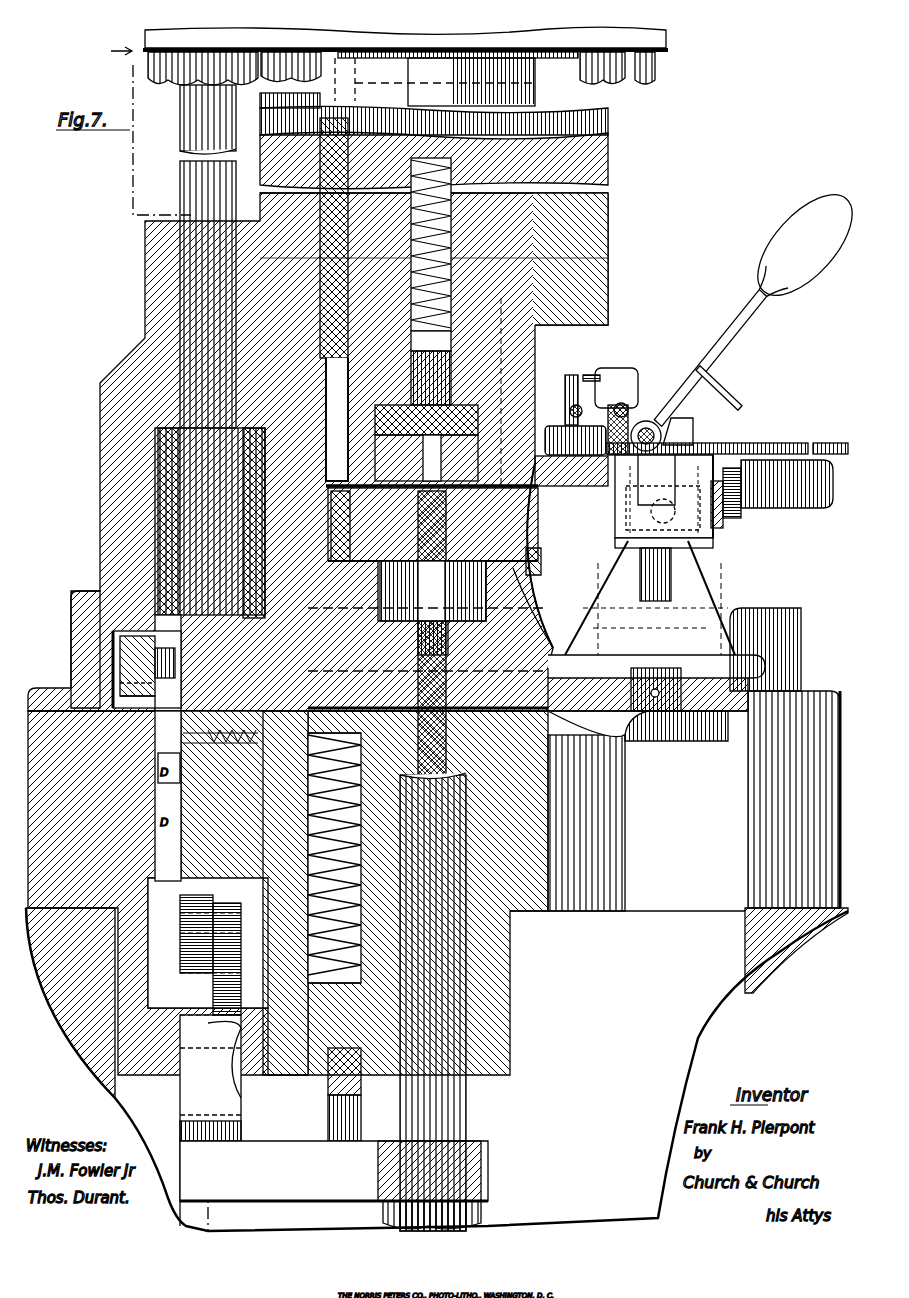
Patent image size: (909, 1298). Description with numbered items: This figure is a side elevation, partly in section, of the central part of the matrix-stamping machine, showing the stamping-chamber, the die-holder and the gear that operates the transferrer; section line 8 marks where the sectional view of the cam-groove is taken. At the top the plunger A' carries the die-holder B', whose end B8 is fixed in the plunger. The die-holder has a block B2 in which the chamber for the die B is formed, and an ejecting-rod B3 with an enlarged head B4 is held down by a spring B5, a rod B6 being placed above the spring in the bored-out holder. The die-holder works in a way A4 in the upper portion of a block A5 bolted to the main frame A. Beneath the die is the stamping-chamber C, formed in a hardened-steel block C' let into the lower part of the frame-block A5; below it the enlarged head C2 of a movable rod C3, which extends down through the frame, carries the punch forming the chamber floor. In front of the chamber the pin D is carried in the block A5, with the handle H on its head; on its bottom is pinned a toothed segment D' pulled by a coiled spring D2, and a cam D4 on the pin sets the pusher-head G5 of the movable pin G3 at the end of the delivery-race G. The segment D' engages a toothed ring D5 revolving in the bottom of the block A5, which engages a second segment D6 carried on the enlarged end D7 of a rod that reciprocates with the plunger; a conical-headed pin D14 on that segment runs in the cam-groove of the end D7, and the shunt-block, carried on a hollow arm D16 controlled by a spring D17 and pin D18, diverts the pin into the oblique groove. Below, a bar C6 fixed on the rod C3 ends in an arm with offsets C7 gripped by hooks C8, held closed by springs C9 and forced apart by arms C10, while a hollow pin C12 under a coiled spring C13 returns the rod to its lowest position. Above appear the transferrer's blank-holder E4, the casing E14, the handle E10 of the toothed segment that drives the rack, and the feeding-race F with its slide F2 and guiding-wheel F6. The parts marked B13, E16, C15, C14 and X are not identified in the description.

The section line 8- 8 is at (162, 638).
The plunger A' is at (641, 60).
The end of the die-holder B8 is at (470, 35).
The rod B6 is at (533, 146).
The way A4 is at (600, 218).
The spring B5 is at (443, 250).
The enlarged head B4 is at (557, 297).
The handle E10 is at (738, 298).
The guiding-wheel F6 is at (573, 355).
The roller B13 is at (612, 396).
The lever pin E16 is at (705, 375).
The ejecting-rod B3 is at (445, 331).
The die-holder B' is at (465, 415).
The casing E14 is at (562, 393).
The blank-holder E4 is at (590, 385).
The slide F2 is at (668, 420).
The feeding-race F is at (707, 425).
The handle H is at (762, 436).
The die B is at (443, 510).
The block B2 is at (545, 478).
The hardened-steel block C' is at (549, 555).
The cam D4 is at (720, 512).
The pusher-head G5 is at (706, 535).
The key C15 is at (533, 550).
The movable pin G3 is at (620, 540).
The delivery-race G is at (705, 553).
The enlarged head C2 is at (525, 590).
The coiled spring D2 is at (705, 636).
The block A5 is at (794, 605).
The nut C14 is at (527, 612).
The main frame A is at (559, 668).
The toothed segment D' is at (730, 680).
The enlarged end D7 is at (147, 607).
The second segment D6 is at (110, 630).
The conical-headed pin D14 is at (115, 650).
The hollow arm D16 is at (120, 665).
The pin D18 is at (125, 680).
The spring D17 is at (130, 690).
The pin D is at (676, 732).
The toothed ring D5 is at (580, 730).
The movable rod C3 is at (467, 948).
The stamping-chamber C is at (334, 858).
The centre piece X is at (452, 567).
The arm C10 is at (200, 917).
The springs C9 is at (217, 937).
The coiled spring C13 is at (253, 967).
The offsets C7 is at (200, 1040).
The gripping-hooks C8 is at (173, 1127).
The hollow pin C12 is at (290, 1073).
The bar C6 is at (287, 1180).